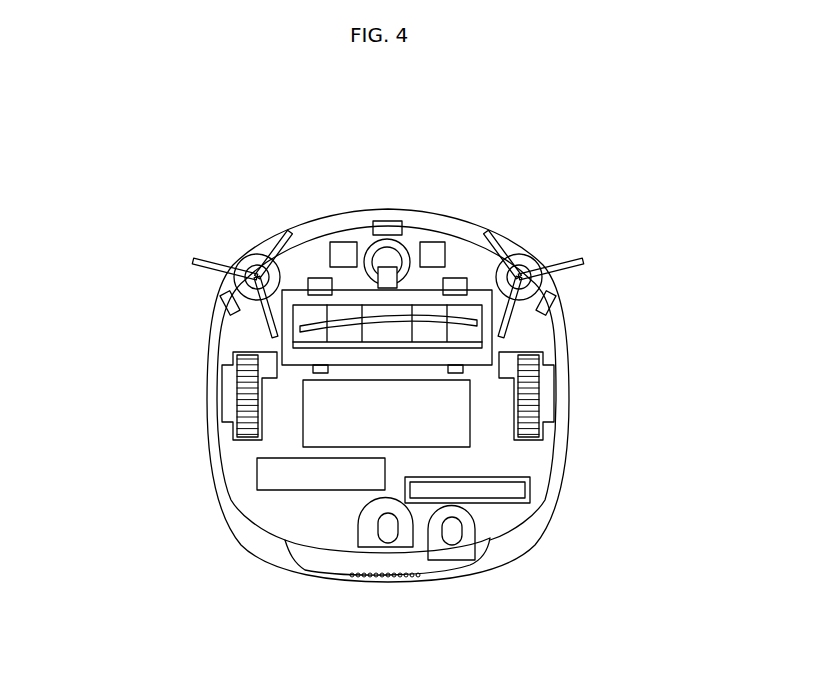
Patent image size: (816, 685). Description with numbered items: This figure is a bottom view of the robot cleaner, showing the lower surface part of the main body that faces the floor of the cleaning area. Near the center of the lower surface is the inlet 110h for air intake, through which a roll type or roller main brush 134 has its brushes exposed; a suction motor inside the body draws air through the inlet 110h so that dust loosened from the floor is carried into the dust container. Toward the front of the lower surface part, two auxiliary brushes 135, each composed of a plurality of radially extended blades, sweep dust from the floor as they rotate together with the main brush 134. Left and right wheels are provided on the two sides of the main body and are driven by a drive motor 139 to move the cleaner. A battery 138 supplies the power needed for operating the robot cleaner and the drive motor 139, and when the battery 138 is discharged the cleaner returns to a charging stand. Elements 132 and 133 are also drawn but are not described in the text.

The inlet 110h is at (307, 335).
The obstacle sensor 132 is at (548, 272).
The cliff sensor 133 is at (340, 260).
The main brush 134 is at (463, 335).
The auxiliary brushes 135 is at (190, 263).
The battery 138 is at (497, 490).
The drive motor 139 is at (452, 538).